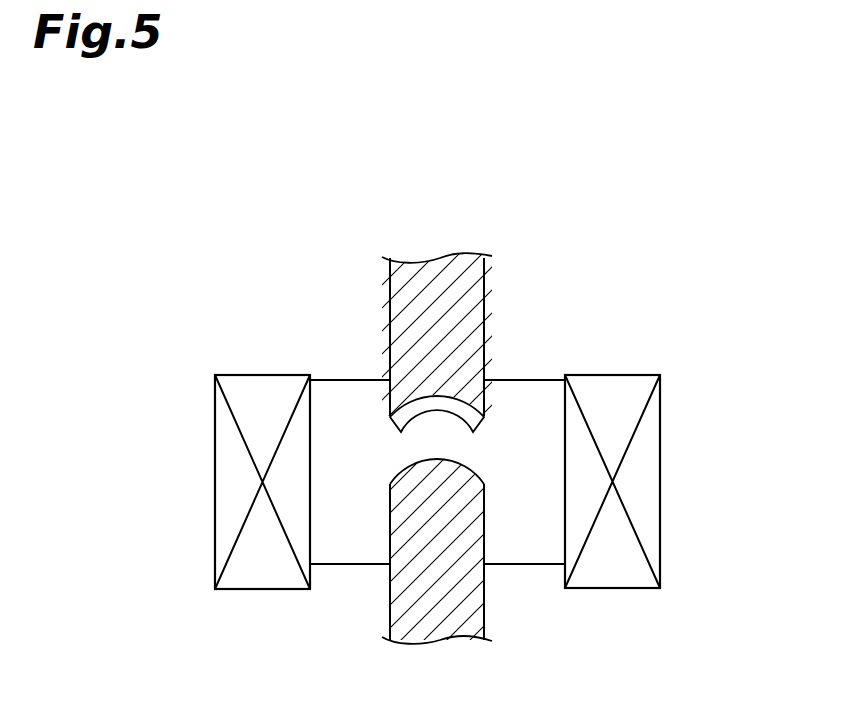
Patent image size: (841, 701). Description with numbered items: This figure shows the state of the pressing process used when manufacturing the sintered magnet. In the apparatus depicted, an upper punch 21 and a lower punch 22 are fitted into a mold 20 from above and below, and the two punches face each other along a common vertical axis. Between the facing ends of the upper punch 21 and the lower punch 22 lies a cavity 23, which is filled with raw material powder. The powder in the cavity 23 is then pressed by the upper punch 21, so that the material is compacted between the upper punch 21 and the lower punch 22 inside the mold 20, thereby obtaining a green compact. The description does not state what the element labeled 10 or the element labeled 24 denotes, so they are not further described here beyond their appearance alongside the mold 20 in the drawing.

The cap member 10 is at (473, 422).
The mold 20 is at (350, 533).
The upper punch 21 is at (462, 321).
The lower punch 22 is at (462, 610).
The cavity 23 is at (432, 442).
The right coil 24 is at (643, 484).